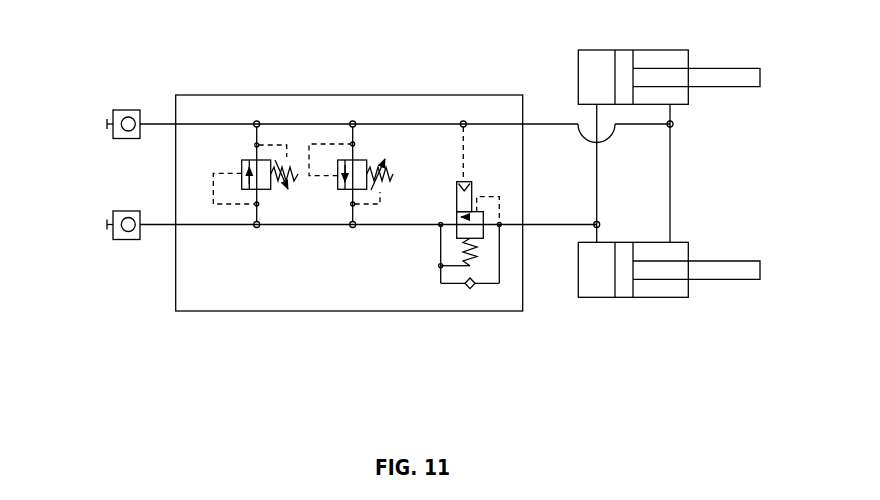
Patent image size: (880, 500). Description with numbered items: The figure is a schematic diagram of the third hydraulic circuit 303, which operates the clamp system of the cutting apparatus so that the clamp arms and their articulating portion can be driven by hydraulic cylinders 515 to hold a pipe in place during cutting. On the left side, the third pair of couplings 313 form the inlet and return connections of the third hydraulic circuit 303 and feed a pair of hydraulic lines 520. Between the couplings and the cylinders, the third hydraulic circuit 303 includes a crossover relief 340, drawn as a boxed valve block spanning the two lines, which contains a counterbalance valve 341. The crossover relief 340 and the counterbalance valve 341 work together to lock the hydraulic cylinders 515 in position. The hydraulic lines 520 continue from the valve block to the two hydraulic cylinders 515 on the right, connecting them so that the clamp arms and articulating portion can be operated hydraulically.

The third hydraulic circuit 303 is at (783, 182).
The third pair of couplings 313 is at (115, 139).
The crossover relief 340 is at (349, 89).
The counterbalance valve 341 is at (482, 298).
The hydraulic cylinders 515 is at (690, 53).
The hydraulic lines 520 is at (543, 124).